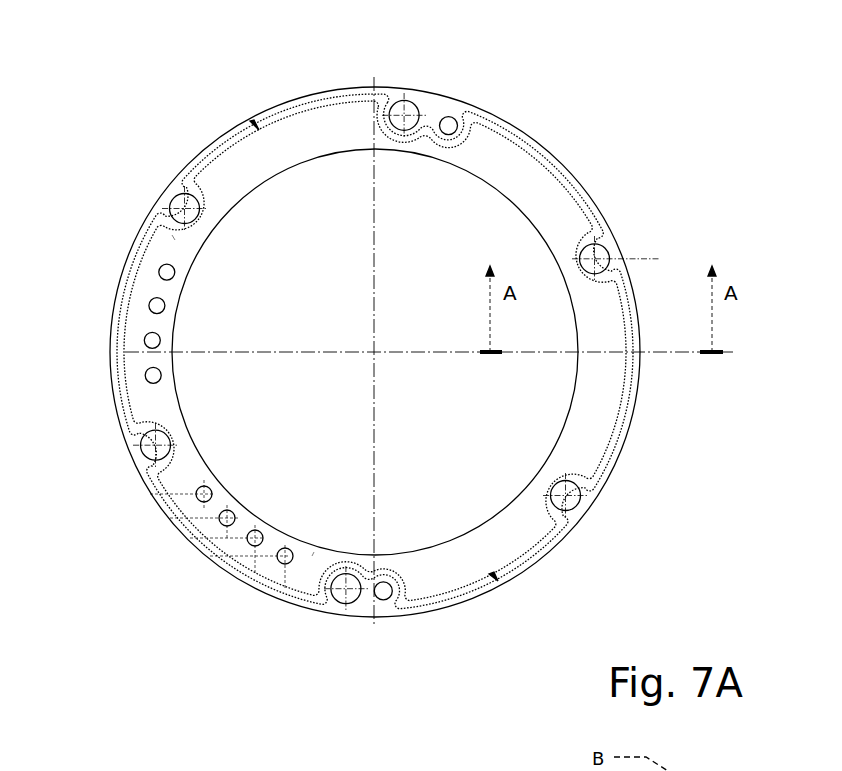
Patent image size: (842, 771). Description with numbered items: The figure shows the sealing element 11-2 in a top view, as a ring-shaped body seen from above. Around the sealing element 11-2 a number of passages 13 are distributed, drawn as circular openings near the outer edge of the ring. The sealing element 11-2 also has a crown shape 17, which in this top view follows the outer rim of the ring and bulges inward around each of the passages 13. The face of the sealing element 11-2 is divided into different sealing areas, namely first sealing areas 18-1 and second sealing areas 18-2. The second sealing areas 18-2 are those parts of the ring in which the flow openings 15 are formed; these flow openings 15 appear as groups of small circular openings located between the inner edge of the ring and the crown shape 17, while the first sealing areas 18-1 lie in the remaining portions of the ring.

The sealing element 11-2 is at (593, 135).
The passages 13 is at (178, 198).
The flow openings 15 is at (153, 340).
The crown shape 17 is at (612, 447).
The first sealing areas 18-1 is at (315, 135).
The second sealing areas 18-2 is at (180, 258).